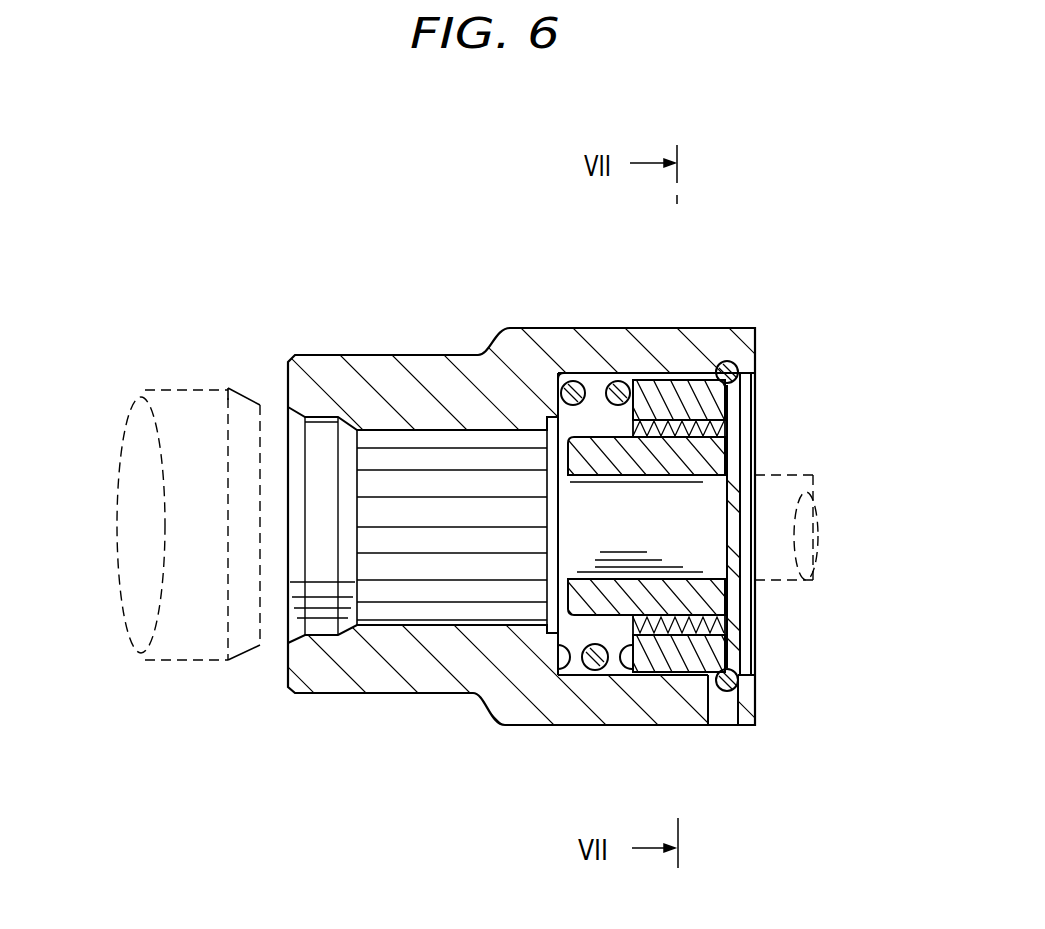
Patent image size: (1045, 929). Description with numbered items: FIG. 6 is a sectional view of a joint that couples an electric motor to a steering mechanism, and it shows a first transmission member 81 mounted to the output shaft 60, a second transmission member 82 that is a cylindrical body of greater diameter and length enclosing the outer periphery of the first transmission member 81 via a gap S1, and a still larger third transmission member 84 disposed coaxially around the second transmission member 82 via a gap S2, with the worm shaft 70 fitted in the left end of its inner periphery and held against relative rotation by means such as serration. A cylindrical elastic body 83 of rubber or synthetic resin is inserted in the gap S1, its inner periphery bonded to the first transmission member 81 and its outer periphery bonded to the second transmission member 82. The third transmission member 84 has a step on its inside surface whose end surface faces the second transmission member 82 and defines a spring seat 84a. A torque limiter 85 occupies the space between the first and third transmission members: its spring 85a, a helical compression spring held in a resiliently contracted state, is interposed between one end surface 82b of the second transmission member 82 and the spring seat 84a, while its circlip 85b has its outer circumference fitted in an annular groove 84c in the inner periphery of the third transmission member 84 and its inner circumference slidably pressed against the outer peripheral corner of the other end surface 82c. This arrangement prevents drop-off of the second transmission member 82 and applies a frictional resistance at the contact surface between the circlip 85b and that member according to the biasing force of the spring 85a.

The output shaft 60 is at (845, 495).
The worm shaft 70 is at (128, 412).
The first transmission member 81 is at (712, 598).
The second transmission member 82 is at (718, 652).
The one end surface 82b is at (623, 418).
The other end surface 82c is at (722, 398).
The elastic body 83 is at (706, 425).
The third transmission member 84 is at (421, 393).
The spring seat 84a is at (565, 373).
The annular groove 84c is at (740, 365).
The torque limiter 85 is at (583, 665).
The spring 85a is at (628, 385).
The circlip 85b is at (726, 694).
The gap S1 is at (663, 373).
The gap S2 is at (656, 678).